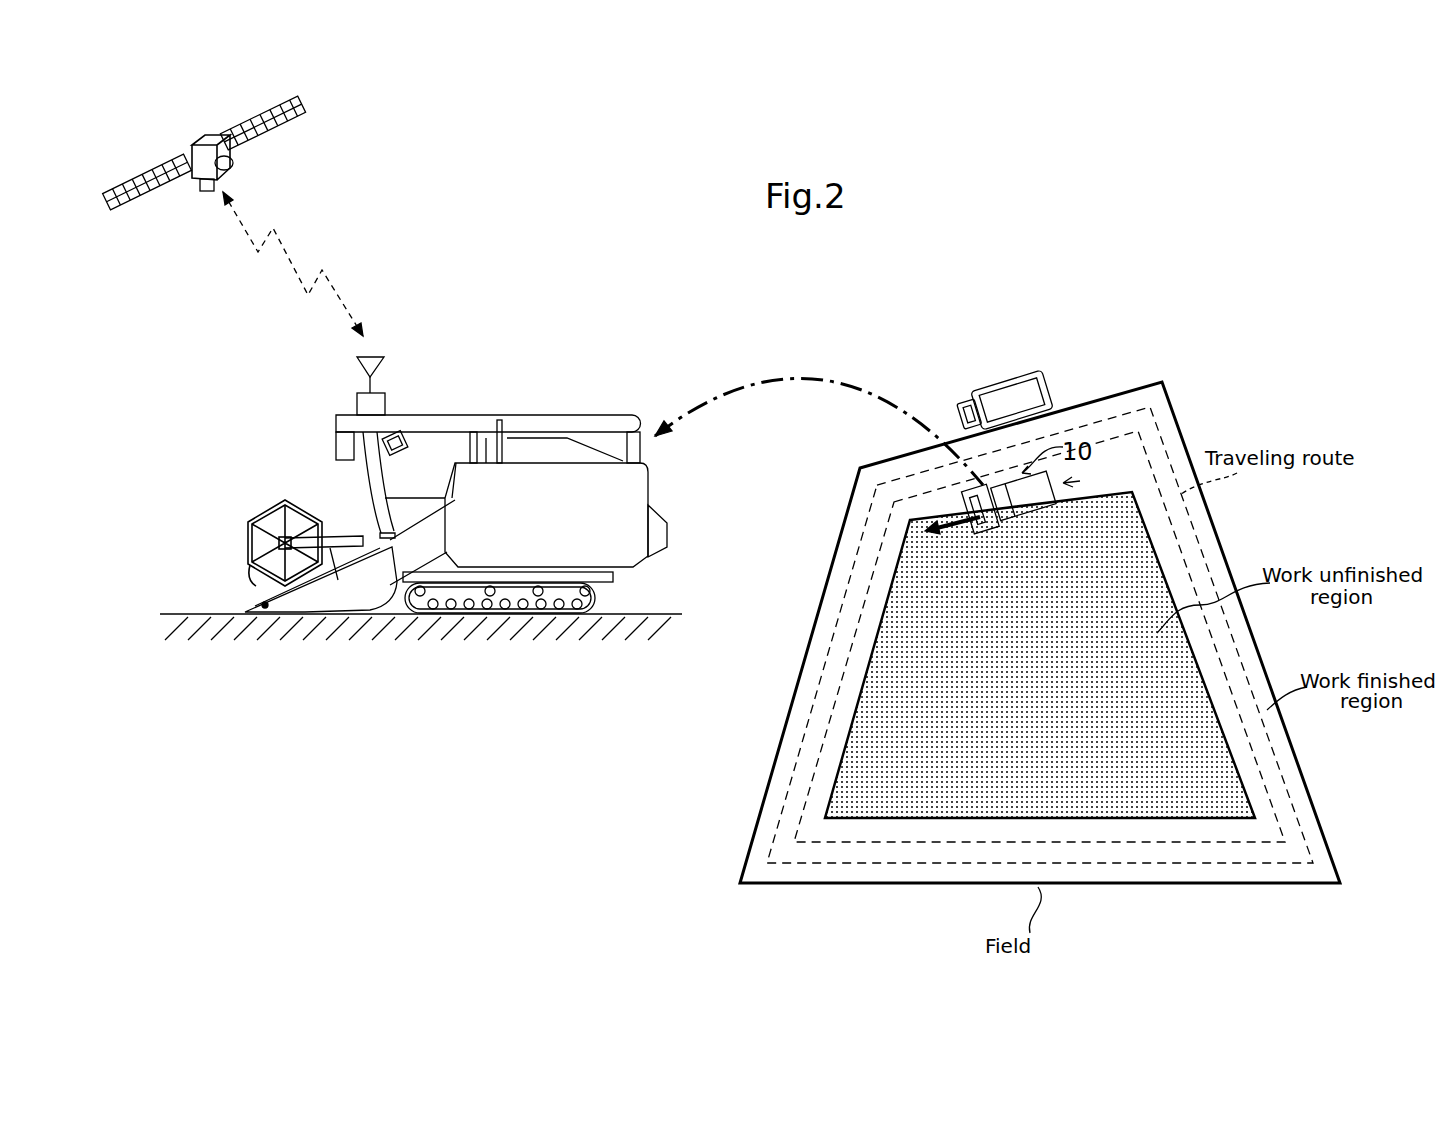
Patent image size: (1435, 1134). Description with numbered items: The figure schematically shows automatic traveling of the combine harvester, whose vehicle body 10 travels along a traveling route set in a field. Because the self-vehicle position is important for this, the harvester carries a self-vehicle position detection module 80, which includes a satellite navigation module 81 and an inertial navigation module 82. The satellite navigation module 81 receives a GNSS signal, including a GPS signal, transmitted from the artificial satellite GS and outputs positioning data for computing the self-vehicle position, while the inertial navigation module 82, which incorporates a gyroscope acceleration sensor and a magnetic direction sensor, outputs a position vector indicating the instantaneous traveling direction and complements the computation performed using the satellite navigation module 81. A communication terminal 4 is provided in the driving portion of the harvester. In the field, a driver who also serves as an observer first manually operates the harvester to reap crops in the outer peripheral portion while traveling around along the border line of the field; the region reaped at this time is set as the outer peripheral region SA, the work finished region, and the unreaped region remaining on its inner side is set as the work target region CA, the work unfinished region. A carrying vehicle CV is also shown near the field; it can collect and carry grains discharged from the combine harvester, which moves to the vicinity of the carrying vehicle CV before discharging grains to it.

The artificial satellite GS is at (226, 167).
The self-vehicle position detection module 80 is at (441, 370).
The satellite navigation module 81 is at (441, 370).
The inertial navigation module 82 is at (385, 395).
The communication terminal 4 is at (407, 440).
The vehicle body 10 is at (462, 482).
The carrying vehicle CV is at (1050, 390).
The outer peripheral region SA is at (1132, 424).
The work target region CA is at (1040, 655).